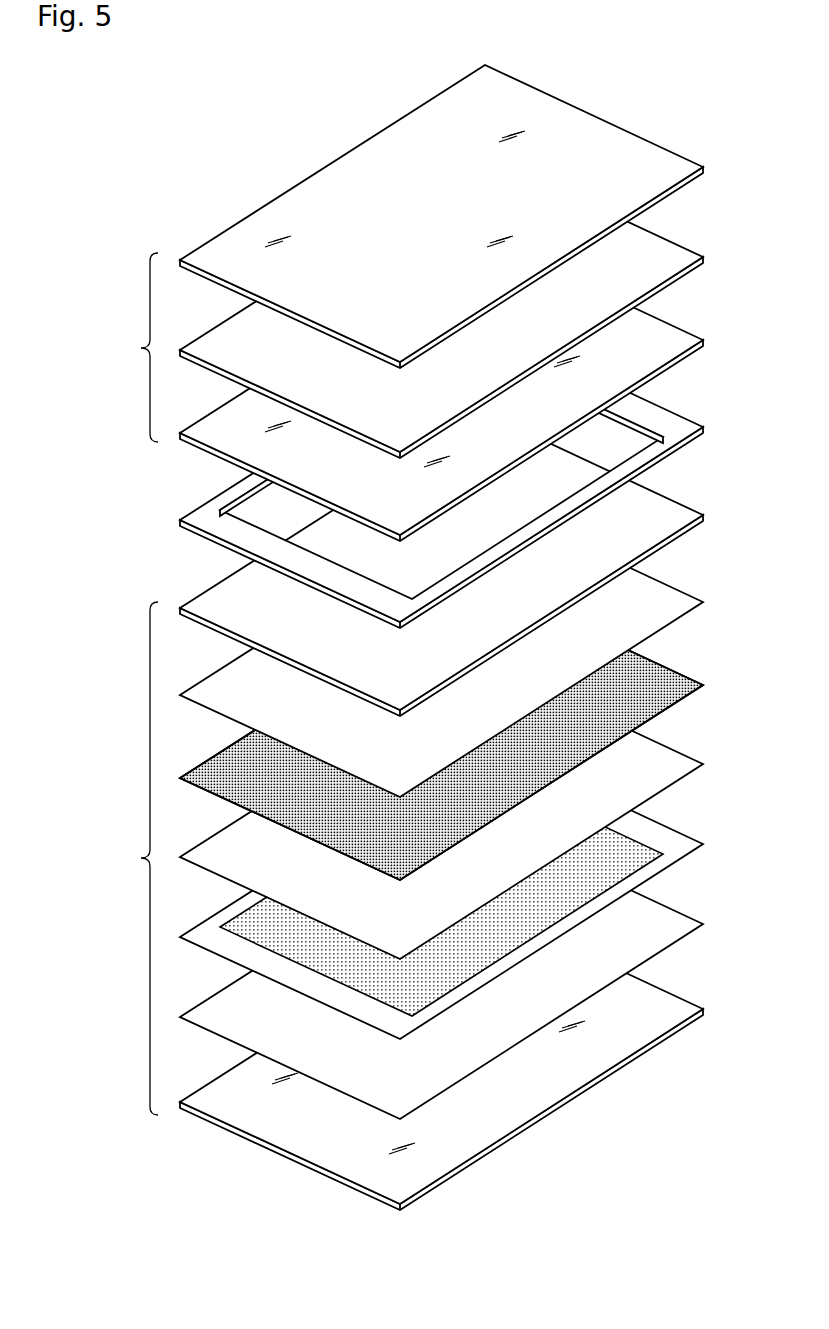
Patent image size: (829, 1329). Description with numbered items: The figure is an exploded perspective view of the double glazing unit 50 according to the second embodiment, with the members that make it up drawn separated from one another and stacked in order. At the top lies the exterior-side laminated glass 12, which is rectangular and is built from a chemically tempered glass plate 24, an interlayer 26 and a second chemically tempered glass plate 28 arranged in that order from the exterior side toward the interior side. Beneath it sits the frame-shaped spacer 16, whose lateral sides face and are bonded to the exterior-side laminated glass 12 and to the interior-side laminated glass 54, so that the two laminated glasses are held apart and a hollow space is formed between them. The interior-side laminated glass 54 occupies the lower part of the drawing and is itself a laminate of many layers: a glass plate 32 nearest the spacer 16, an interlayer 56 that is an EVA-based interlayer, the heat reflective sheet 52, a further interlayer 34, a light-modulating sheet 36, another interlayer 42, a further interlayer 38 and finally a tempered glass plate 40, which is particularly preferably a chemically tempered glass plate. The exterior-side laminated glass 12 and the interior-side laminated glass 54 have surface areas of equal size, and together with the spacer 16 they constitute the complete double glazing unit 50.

The double glazing unit 50 is at (666, 115).
The exterior-side laminated glass 12 is at (132, 347).
The chemically tempered glass plate 24 is at (684, 167).
The interlayer 26 is at (685, 253).
The chemically tempered glass plate 28 is at (685, 338).
The spacer 16 is at (685, 414).
The glass plate 32 is at (685, 515).
The interior-side laminated glass 54 is at (132, 858).
The interlayer 56 is at (685, 600).
The heat reflective sheet 52 is at (685, 683).
The interlayer 34 is at (685, 766).
The light-modulating sheet 36 is at (450, 890).
The interlayer 42 is at (687, 845).
The interlayer 38 is at (685, 927).
The tempered glass plate 40 is at (685, 1007).